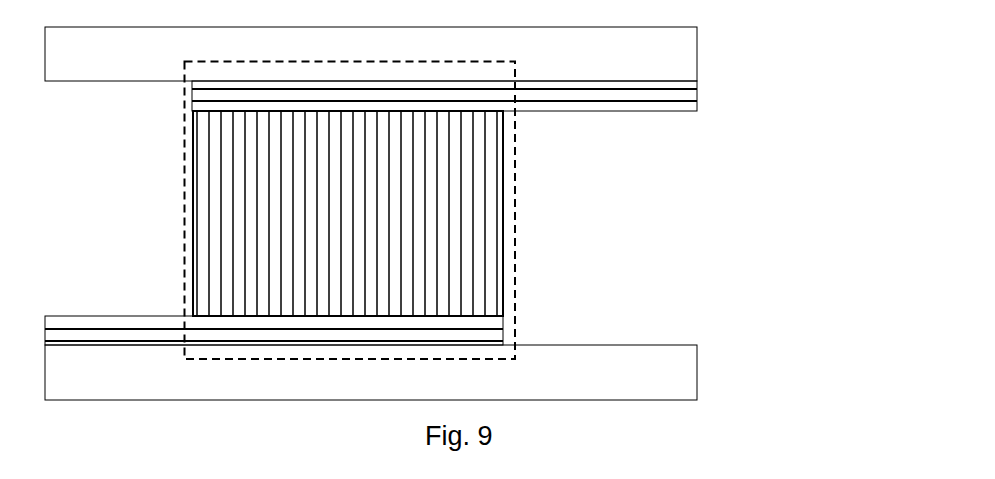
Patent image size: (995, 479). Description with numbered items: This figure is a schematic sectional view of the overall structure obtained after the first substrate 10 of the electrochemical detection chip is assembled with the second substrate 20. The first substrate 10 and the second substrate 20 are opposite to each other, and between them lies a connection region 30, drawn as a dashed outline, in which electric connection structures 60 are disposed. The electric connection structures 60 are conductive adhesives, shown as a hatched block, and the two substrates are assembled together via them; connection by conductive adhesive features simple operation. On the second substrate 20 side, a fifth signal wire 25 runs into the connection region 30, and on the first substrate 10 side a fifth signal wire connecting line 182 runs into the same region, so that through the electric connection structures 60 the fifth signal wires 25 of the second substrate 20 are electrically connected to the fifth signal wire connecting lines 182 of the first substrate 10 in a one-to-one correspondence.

The first substrate 10 is at (656, 372).
The second substrate 20 is at (656, 53).
The fifth signal wire 25 is at (660, 92).
The connection region 30 is at (515, 162).
The electric connection structure 60 is at (474, 237).
The fifth signal wire connecting line 182 is at (480, 334).